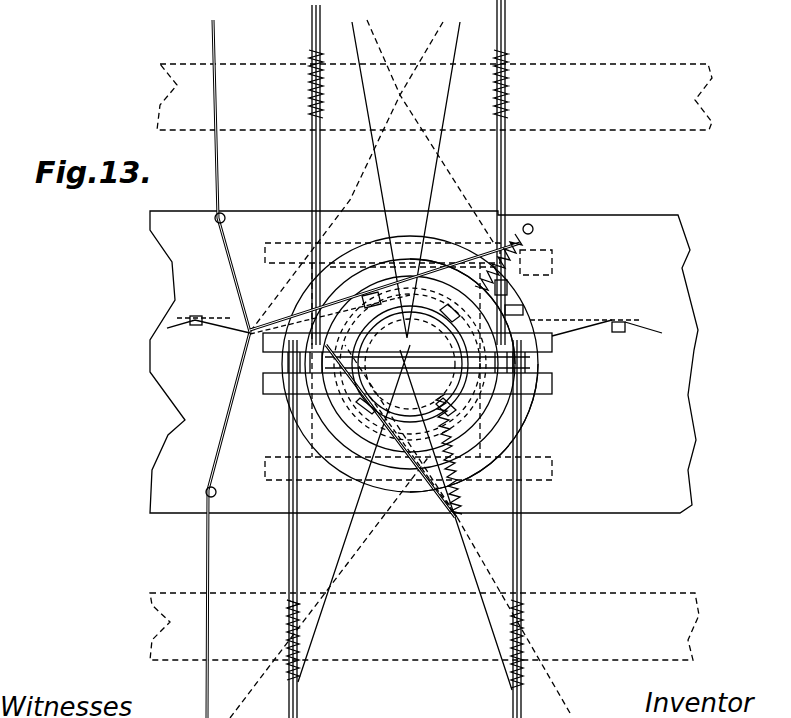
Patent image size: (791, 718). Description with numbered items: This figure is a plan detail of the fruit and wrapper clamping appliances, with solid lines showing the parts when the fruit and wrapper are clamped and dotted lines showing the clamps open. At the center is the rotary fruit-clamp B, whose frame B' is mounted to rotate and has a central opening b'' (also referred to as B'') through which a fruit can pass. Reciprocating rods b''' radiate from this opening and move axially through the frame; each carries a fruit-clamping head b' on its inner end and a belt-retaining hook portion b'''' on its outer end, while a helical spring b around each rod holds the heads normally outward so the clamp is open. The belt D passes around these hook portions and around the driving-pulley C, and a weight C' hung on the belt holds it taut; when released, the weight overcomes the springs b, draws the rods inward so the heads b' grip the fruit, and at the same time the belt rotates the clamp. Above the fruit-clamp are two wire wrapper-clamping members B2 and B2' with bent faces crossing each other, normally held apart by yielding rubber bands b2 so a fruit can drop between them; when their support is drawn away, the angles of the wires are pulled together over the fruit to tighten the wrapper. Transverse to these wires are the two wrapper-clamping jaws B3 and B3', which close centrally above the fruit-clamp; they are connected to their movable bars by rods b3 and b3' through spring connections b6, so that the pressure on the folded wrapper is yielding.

The fruit-clamp B is at (354, 380).
The frame B' is at (487, 428).
The central opening B'' is at (505, 338).
The wrapper-clamping member B2 is at (405, 356).
The wrapper-clamping member B2' is at (400, 369).
The wrapper-clamping jaw B3 is at (424, 347).
The wrapper-clamping jaw B3' is at (428, 386).
The spring b is at (524, 288).
The fruit-clamping head b' is at (410, 363).
The central opening b'' is at (410, 367).
The reciprocating rod b''' is at (545, 306).
The hook portion b'''' is at (466, 369).
The yielding means b2 is at (200, 321).
The rod b3 is at (415, 529).
The rod b3' is at (417, 172).
The spring connection b6 is at (286, 620).
The driving-pulley C is at (228, 204).
The weight C' is at (225, 484).
The belt D is at (238, 292).